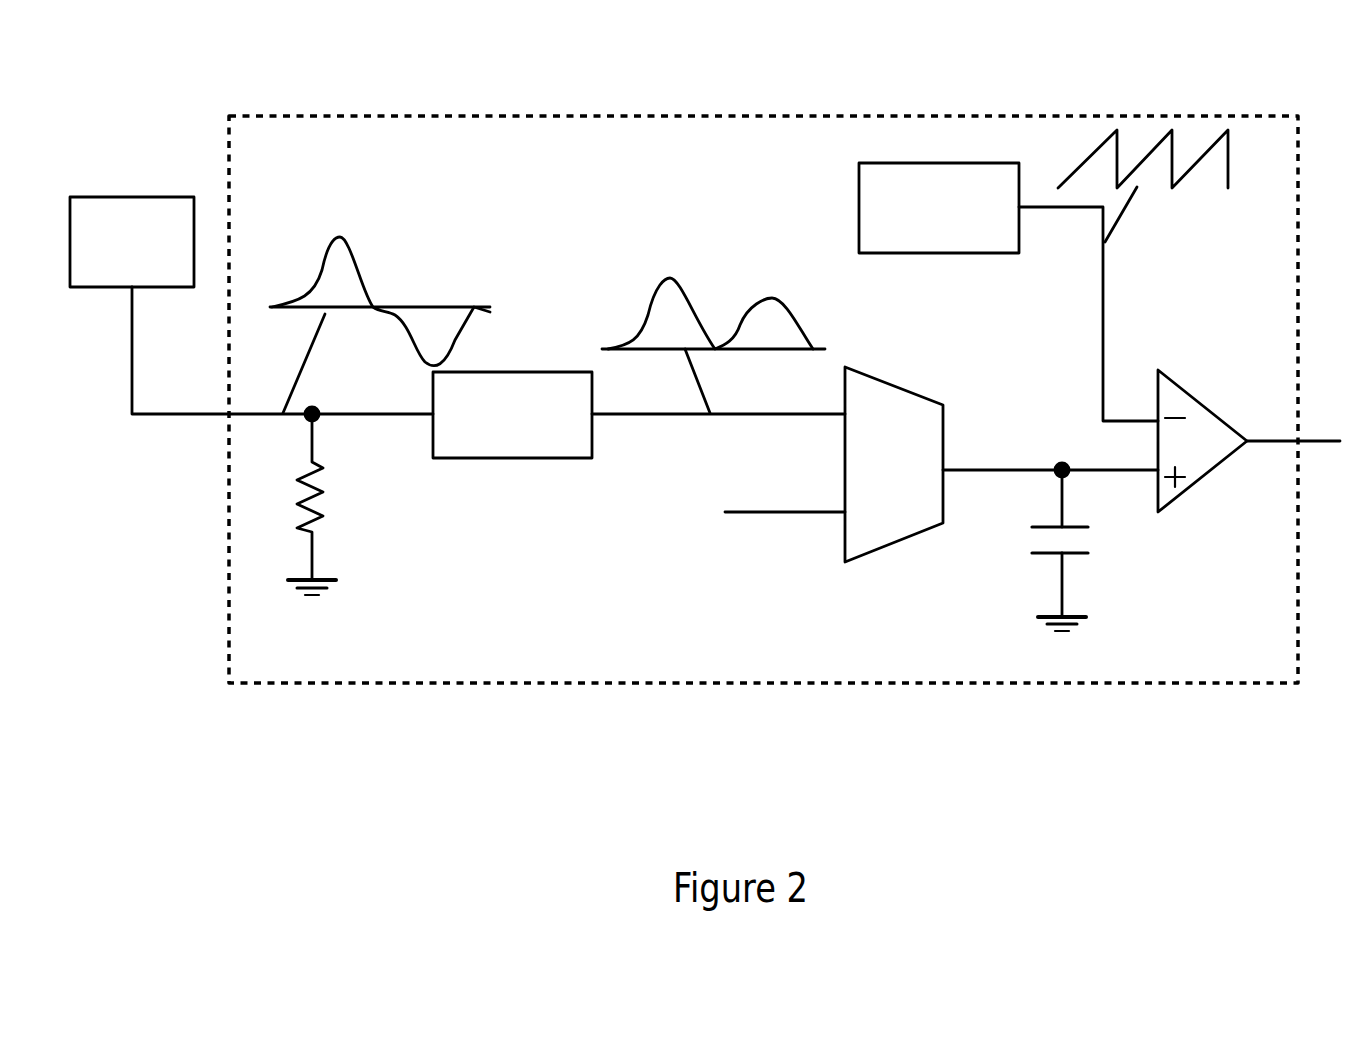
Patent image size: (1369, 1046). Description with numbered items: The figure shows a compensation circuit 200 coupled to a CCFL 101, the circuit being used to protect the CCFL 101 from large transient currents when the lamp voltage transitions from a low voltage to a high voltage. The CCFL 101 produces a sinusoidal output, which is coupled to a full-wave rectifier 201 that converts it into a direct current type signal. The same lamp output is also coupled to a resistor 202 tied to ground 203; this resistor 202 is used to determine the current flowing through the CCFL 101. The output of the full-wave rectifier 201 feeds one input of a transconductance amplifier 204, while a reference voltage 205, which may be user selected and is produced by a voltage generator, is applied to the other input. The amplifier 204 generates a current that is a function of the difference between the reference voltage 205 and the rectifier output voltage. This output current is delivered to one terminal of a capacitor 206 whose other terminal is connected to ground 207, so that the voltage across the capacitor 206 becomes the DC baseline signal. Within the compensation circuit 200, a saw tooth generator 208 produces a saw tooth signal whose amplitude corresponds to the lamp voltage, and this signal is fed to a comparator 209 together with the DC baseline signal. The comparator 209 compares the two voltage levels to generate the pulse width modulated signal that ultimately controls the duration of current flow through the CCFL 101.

The CCFL 101 is at (132, 197).
The compensation circuit 200 is at (740, 158).
The full-wave rectifier 201 is at (512, 372).
The resistor 202 is at (340, 487).
The ground 203 is at (338, 598).
The transconductance amplifier 204 is at (893, 543).
The reference voltage 205 is at (755, 512).
The capacitor 206 is at (1088, 538).
The ground 207 is at (1088, 625).
The saw tooth generator 208 is at (978, 253).
The comparator 209 is at (1197, 408).